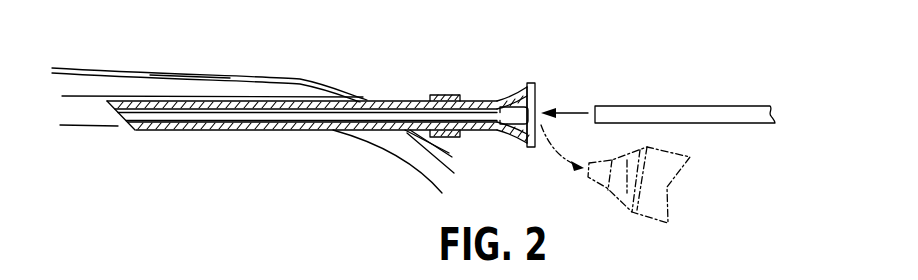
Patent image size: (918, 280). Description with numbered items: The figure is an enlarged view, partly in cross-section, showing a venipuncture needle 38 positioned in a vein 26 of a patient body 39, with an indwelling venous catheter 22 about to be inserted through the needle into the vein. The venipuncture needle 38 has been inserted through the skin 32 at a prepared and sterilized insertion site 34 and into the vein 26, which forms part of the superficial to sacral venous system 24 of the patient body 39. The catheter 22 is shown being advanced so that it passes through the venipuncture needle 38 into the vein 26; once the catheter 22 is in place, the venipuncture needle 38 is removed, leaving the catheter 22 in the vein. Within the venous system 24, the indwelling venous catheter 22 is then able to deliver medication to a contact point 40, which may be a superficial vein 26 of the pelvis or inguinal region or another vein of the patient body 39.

The indwelling venous catheter 22 is at (646, 113).
The superficial to sacral venous system 24 is at (408, 175).
The vein 26 is at (75, 127).
The skin 32 is at (238, 82).
The insertion site 34 is at (370, 100).
The venipuncture needle 38 is at (418, 97).
The patient body 39 is at (185, 74).
The contact point 40 is at (115, 124).